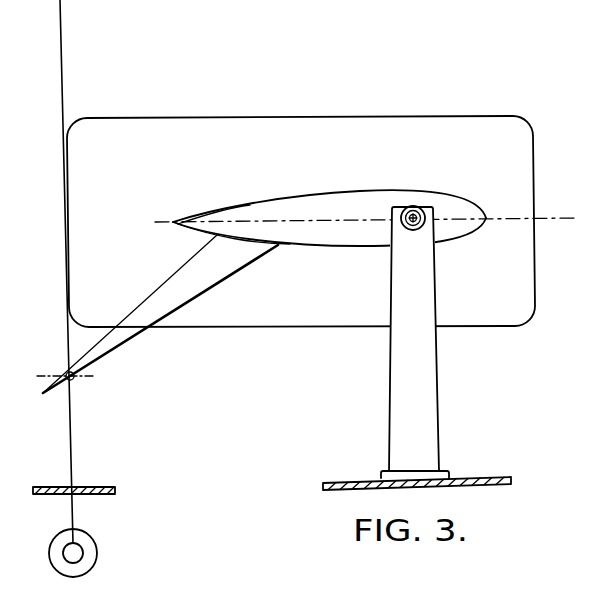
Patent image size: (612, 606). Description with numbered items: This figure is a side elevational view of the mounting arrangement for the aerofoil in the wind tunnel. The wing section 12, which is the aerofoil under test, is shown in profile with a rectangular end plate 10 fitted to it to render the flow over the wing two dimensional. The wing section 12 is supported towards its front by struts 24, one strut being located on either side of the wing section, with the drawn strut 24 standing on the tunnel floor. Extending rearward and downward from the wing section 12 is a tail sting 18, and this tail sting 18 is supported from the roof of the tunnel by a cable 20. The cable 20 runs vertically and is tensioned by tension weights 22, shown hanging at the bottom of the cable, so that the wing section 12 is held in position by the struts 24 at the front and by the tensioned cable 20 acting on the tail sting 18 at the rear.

The rectangular end plate 10 is at (386, 117).
The wing section 12 is at (428, 194).
The tail sting 18 is at (117, 349).
The cable 20 is at (60, 112).
The tension weight 22 is at (93, 551).
The strut 24 is at (433, 409).